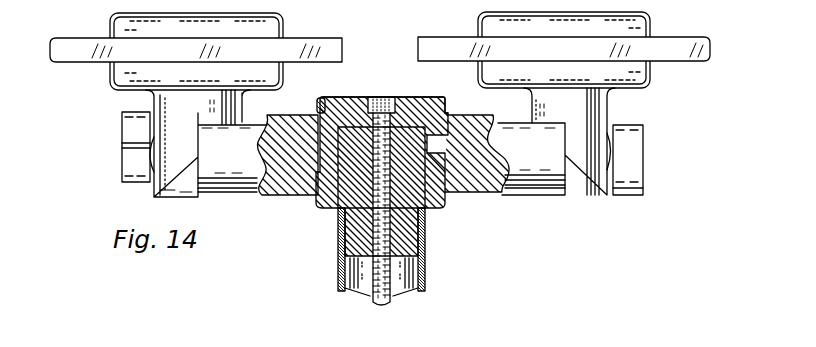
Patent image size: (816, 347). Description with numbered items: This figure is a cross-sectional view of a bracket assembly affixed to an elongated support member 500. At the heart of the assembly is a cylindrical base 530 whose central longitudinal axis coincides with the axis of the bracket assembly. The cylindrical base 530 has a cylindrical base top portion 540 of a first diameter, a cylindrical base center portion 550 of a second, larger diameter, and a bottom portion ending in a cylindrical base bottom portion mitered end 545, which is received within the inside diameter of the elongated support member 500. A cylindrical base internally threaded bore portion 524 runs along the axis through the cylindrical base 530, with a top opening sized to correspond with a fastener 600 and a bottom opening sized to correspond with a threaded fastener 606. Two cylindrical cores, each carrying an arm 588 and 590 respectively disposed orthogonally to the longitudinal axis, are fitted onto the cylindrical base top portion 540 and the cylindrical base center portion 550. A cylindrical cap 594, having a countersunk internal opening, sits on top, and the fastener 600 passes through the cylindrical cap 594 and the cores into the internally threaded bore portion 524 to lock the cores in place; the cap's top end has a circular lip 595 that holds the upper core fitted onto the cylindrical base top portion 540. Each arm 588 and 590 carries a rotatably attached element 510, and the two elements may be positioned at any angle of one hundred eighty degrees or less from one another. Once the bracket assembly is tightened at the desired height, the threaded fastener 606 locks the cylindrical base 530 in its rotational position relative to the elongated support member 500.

The elongated support member 500 is at (338, 270).
The rotatably attached element 510 is at (110, 76).
The cylindrical base internally threaded bore portion 524 is at (400, 214).
The cylindrical base 530 is at (303, 183).
The cylindrical base top portion 540 is at (446, 138).
The cylindrical base bottom portion mitered end 545 is at (424, 250).
The cylindrical base center portion 550 is at (450, 196).
The arm 588 is at (228, 172).
The arm 590 is at (536, 178).
The cylindrical cap 594 is at (410, 98).
The circular lip 595 is at (317, 104).
The fastener 600 is at (375, 98).
The threaded fastener 606 is at (390, 303).